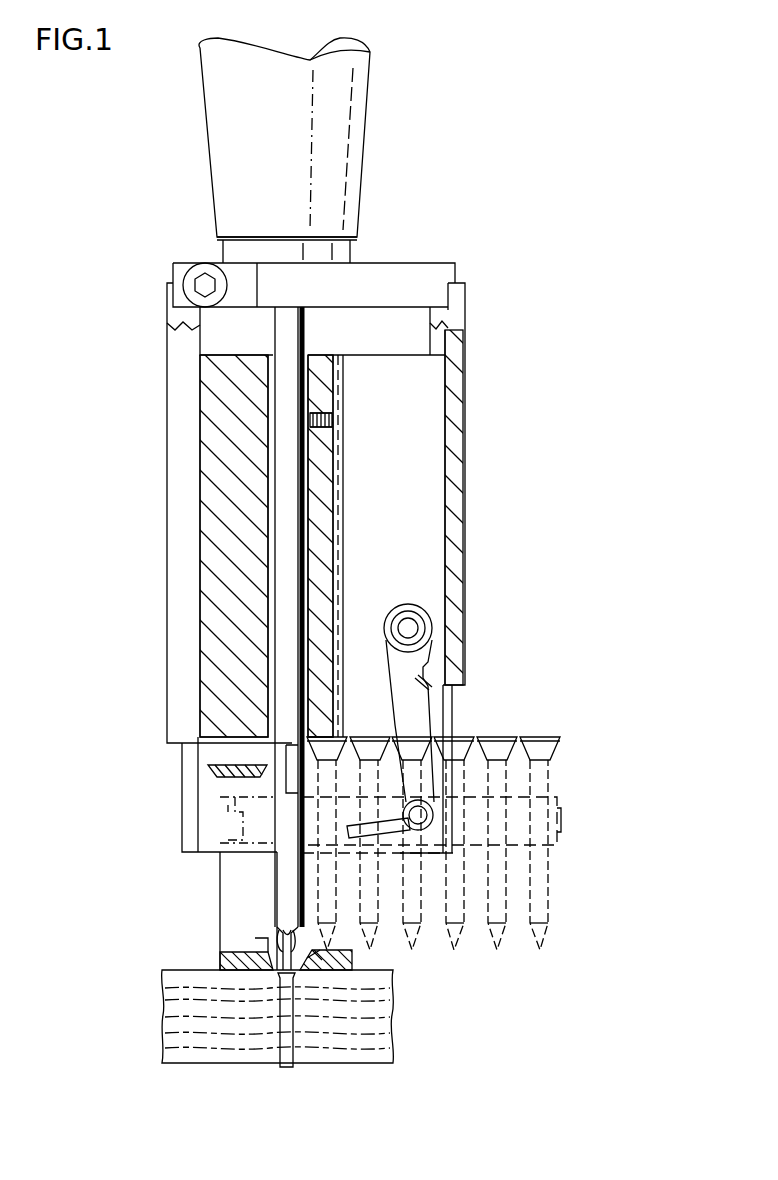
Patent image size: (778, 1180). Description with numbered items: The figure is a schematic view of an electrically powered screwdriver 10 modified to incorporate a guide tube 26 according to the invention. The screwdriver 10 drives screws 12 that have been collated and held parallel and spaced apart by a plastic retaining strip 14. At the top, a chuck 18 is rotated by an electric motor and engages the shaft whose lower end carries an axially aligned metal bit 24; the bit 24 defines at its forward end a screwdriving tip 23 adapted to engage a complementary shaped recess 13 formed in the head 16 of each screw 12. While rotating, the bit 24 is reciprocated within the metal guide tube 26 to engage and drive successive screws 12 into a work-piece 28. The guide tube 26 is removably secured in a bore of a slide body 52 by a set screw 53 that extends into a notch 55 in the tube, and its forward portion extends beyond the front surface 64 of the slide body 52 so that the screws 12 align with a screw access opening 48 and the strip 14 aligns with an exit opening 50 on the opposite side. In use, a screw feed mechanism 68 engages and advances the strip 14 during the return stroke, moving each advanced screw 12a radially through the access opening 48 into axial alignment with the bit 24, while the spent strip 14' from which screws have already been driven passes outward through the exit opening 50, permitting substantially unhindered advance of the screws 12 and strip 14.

The power screwdriver 10 is at (517, 238).
The screws 12 is at (462, 952).
The advanced screw 12a is at (285, 1068).
The recess 13 is at (507, 739).
The plastic retaining strip 14 is at (464, 822).
The spent plastic strip 14' is at (182, 834).
The screw head 16 is at (546, 740).
The chuck 18 is at (204, 113).
The screwdriving tip 23 is at (268, 957).
The metal bit 24 is at (272, 928).
The guide tube 26 is at (287, 455).
The work-piece 28 is at (175, 1042).
The screw access opening 48 is at (286, 770).
The exit opening 50 is at (270, 830).
The slide body 52 is at (213, 580).
The set screw 53 is at (333, 420).
The notch 55 is at (298, 421).
The front surface 64 is at (193, 753).
The screw feed mechanism 68 is at (424, 707).